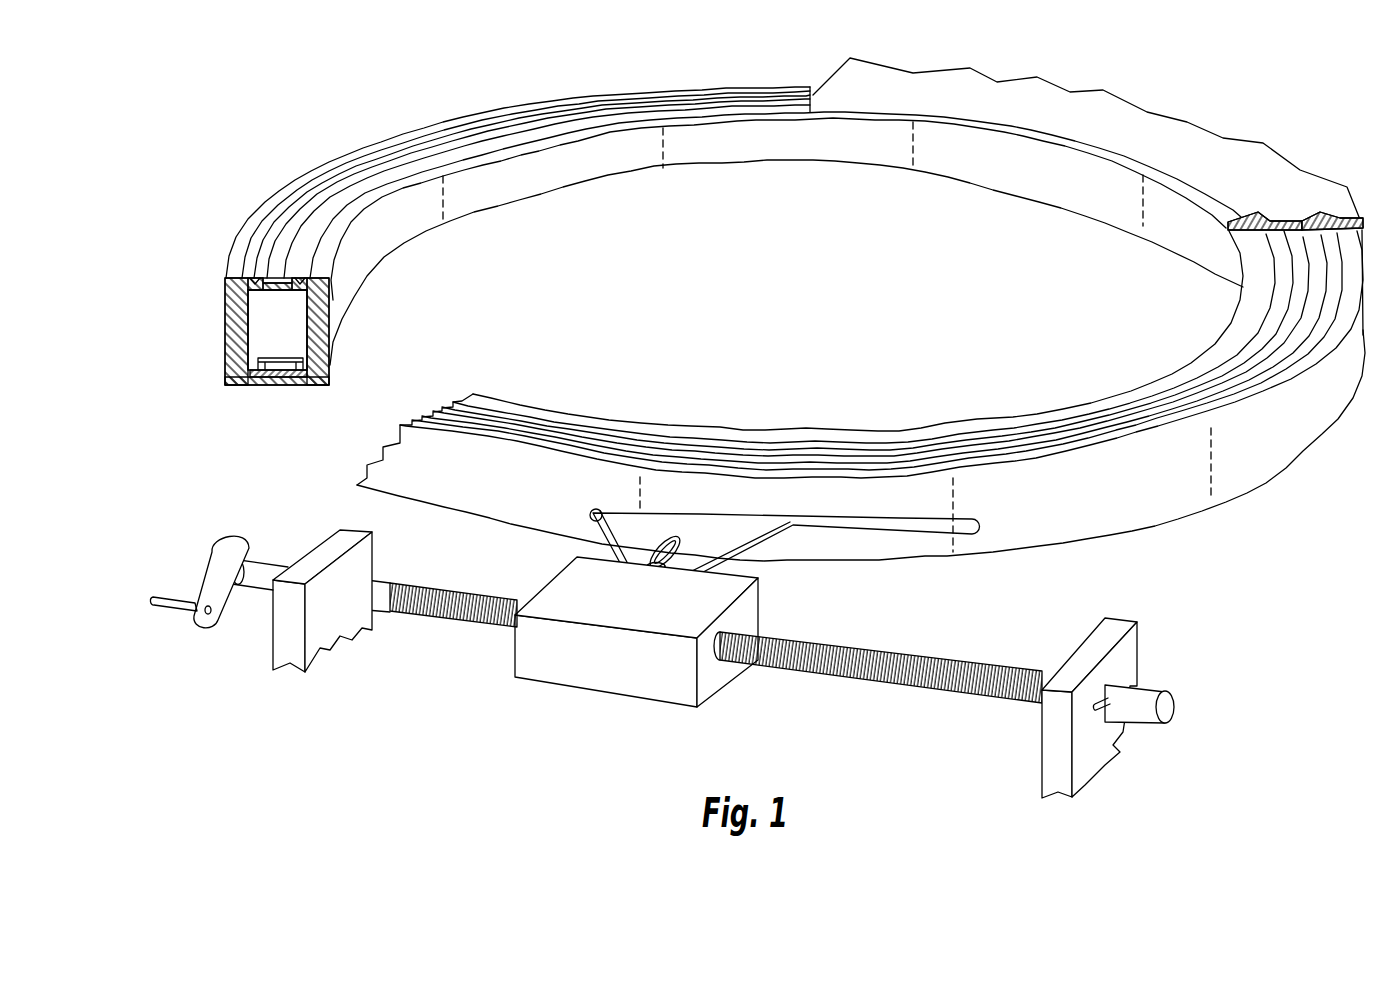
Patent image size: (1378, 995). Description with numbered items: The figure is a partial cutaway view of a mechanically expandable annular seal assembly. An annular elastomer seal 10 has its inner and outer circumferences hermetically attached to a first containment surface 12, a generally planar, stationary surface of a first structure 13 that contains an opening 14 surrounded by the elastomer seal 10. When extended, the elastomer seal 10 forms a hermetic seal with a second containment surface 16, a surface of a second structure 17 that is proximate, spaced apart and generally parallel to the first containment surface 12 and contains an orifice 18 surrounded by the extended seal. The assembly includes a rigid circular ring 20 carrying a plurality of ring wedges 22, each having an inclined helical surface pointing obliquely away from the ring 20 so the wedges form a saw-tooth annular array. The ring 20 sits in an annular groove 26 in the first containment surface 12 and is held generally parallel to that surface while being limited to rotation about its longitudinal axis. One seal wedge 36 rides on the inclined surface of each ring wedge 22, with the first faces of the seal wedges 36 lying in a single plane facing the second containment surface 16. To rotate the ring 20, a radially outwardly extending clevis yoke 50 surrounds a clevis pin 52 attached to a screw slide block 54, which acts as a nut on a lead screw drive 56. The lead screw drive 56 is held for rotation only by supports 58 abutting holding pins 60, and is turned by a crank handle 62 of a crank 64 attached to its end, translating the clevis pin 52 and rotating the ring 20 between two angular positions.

The annular elastomer seal 10 is at (298, 240).
The first containment surface 12 is at (242, 262).
The first structure 13 is at (240, 345).
The opening 14 is at (415, 268).
The second containment surface 16 is at (1277, 233).
The second structure 17 is at (1313, 200).
The orifice 18 is at (1125, 155).
The rigid circular ring 20 is at (258, 373).
The ring wedges 22 is at (283, 371).
The annular groove 26 is at (262, 327).
The seal wedges 36 is at (258, 296).
The clevis yoke 50 is at (733, 532).
The clevis pin 52 is at (647, 600).
The screw slide block 54 is at (662, 688).
The lead screw drive 56 is at (465, 603).
The supports 58 is at (317, 635).
The holding pins 60 is at (1103, 705).
The crank handle 62 is at (168, 603).
The crank 64 is at (217, 598).